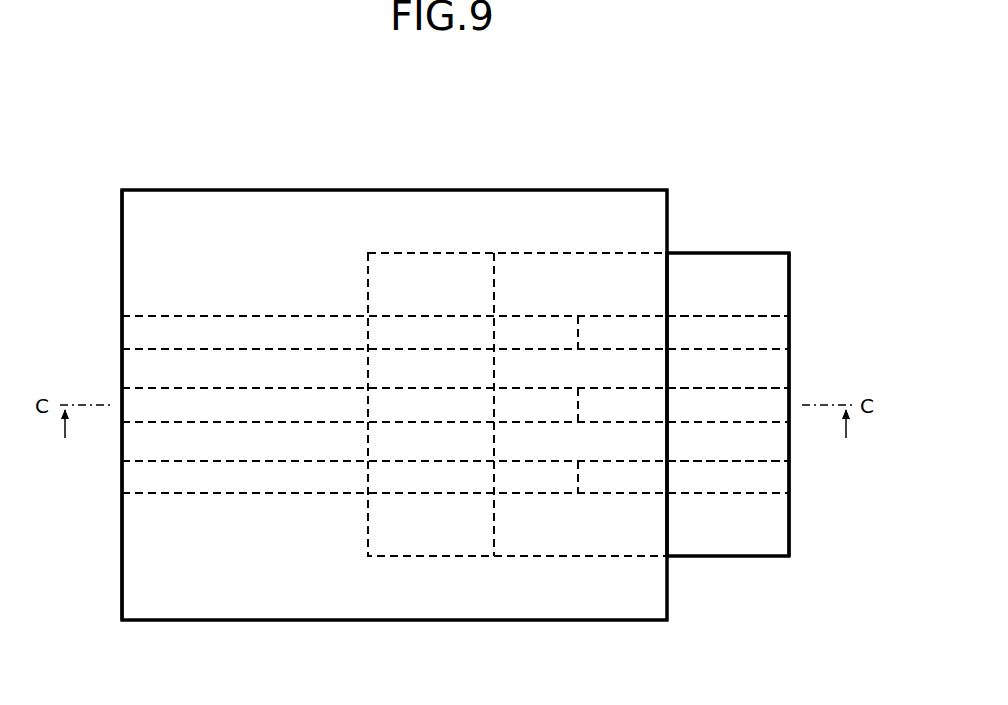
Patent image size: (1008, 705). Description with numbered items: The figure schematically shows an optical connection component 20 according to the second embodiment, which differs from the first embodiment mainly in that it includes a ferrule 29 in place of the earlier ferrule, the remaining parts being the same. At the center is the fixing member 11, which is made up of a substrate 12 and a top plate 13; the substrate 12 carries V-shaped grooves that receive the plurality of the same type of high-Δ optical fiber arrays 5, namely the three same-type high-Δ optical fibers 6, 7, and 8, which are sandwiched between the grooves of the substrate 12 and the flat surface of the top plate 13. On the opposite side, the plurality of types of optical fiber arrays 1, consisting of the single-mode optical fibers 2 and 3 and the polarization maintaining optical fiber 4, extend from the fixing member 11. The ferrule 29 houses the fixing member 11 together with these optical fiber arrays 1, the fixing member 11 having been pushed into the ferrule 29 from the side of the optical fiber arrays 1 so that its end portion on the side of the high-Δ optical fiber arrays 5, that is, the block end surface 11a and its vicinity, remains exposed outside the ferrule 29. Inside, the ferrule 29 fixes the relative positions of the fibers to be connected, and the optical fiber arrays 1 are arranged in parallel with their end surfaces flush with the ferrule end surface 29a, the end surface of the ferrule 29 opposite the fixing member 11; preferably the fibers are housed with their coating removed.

The optical connection component 20 is at (74, 97).
The ferrule 29 is at (166, 190).
The ferrule end surface 29a is at (116, 538).
The fixing member 11 is at (750, 132).
The block end surface 11a is at (796, 538).
The substrate 12 is at (431, 268).
The top plate 13 is at (726, 253).
The plurality of types of optical fiber arrays 1 is at (303, 658).
The single-mode optical fiber 2 is at (213, 335).
The single-mode optical fiber 3 is at (288, 475).
The polarization maintaining optical fiber 4 is at (249, 400).
The plurality of the same type of high-Δ optical fiber arrays 5 is at (780, 658).
The high-Δ optical fiber 6 is at (690, 335).
The high-Δ optical fiber 7 is at (766, 475).
The high-Δ optical fiber 8 is at (728, 403).